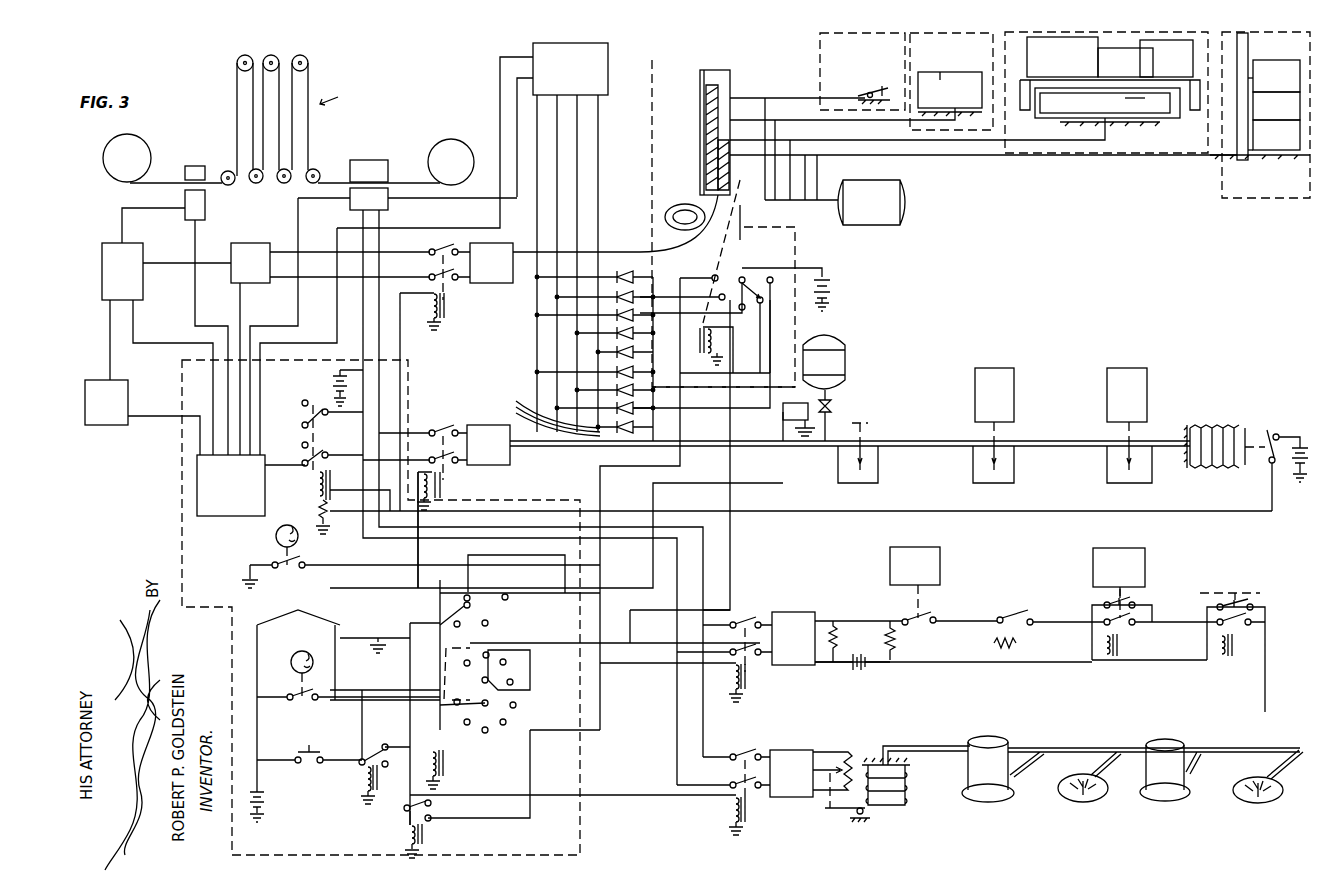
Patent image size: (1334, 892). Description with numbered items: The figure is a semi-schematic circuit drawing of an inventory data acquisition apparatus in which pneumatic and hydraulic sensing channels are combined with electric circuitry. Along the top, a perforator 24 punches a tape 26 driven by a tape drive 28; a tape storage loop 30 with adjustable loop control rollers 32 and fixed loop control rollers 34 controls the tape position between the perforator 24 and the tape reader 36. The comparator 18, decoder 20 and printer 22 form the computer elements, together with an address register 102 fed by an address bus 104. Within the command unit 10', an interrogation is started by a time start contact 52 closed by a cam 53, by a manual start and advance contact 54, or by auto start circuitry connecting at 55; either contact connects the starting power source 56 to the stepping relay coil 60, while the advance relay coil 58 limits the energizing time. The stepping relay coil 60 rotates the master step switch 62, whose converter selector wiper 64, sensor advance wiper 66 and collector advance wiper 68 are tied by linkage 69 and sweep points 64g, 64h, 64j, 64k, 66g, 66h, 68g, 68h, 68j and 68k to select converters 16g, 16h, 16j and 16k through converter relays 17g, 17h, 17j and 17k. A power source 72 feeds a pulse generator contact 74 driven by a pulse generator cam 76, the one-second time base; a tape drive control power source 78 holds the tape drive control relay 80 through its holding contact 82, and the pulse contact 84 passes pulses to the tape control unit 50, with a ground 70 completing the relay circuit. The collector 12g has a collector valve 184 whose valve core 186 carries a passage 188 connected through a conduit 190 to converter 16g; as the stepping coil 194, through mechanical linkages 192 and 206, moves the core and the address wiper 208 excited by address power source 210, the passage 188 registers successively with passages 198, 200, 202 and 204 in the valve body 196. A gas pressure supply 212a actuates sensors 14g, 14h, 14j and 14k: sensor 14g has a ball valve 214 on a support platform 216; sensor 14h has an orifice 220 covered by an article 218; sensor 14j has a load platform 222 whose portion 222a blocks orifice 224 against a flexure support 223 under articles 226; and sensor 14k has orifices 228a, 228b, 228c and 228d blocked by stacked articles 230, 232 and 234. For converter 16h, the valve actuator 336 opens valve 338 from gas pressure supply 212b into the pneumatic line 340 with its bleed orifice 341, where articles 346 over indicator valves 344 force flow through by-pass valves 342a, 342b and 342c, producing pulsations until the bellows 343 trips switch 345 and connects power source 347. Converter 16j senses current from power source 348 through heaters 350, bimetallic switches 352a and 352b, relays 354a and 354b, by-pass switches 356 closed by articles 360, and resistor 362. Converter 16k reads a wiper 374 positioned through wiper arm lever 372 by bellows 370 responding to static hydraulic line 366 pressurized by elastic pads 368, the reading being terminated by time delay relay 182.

The command unit 10' is at (378, 607).
The collector 12g is at (651, 145).
The sensor 14g is at (820, 52).
The sensor 14h is at (912, 124).
The sensor 14j is at (1020, 153).
The sensor 14k is at (1270, 198).
The converter 16g is at (492, 272).
The converter 16h is at (489, 454).
The converter 16j is at (796, 648).
The converter 16k is at (793, 784).
The converter relay 17g is at (447, 306).
The converter relay 17h is at (444, 484).
The converter relay 17j is at (750, 679).
The converter relay 17k is at (748, 810).
The comparator 18 is at (258, 272).
The decoder 20 is at (129, 281).
The printer 22 is at (113, 412).
The perforator 24 is at (367, 160).
The punched tape 26 is at (393, 184).
The tape drive 28 is at (459, 171).
The tape storage loop 30 is at (339, 98).
The adjustable loop control rollers 32 is at (307, 57).
The fixed loop control rollers 34 is at (318, 170).
The tape reader 36 is at (205, 212).
The tape control unit 50 is at (238, 495).
The time start contact 52 is at (302, 703).
The cam 53 is at (302, 651).
The manual start and advance contact 54 is at (314, 755).
The auto start circuitry connection 55 is at (298, 611).
The starting power source 56 is at (267, 800).
The advance relay coil 58 is at (365, 787).
The stepping relay coil 60 is at (447, 760).
The master step switch 62 is at (591, 624).
The converter selector wiper 64 is at (488, 606).
The contact point 64g is at (478, 576).
The contact point 64h is at (509, 597).
The contact point 64j is at (463, 606).
The contact point 64k is at (462, 626).
The sensor advance wiper 66 is at (509, 670).
The contact point 66g is at (490, 656).
The contact point 66h is at (514, 668).
The collector advance wiper 68 is at (480, 730).
The contact point 68g is at (495, 740).
The contact point 68h is at (455, 725).
The contact point 68j is at (510, 731).
The contact point 68k is at (517, 703).
The linkage 69 is at (440, 670).
The ground 70 is at (366, 648).
The power source 72 is at (246, 582).
The pulse generator contact 74 is at (287, 569).
The pulse generator cam 76 is at (276, 538).
The tape drive control power source 78 is at (354, 392).
The tape drive control relay 80 is at (315, 487).
The holding contact 82 is at (302, 410).
The pulse contact 84 is at (302, 448).
The address register 102 is at (580, 79).
The address bus 104 is at (541, 418).
The time delay relay 182 is at (425, 834).
The collector valve 184 is at (697, 64).
The valve core 186 is at (712, 110).
The passage 188 is at (718, 158).
The conduit 190 is at (646, 252).
The mechanical linkage 192 is at (738, 235).
The stepping coil 194 is at (701, 354).
The valve body 196 is at (700, 82).
The passage 198 is at (730, 98).
The passage 200 is at (730, 120).
The passage 202 is at (730, 140).
The passage 204 is at (757, 222).
The mechanical linkage 206 is at (731, 278).
The address wiper 208 is at (748, 278).
The address power source 210 is at (833, 288).
The gas pressure supply 212a is at (905, 203).
The gas pressure supply 212b is at (847, 362).
The ball valve 214 is at (866, 95).
The support platform 216 is at (882, 88).
The article 218 is at (940, 72).
The orifice 220 is at (966, 106).
The load platform 222 is at (1022, 110).
The platform portion 222a is at (1100, 98).
The flexure support 223 is at (1140, 96).
The orifice 224 is at (1120, 100).
The articles 226 is at (1110, 57).
The orifice 228a is at (1246, 160).
The orifice 228b is at (1240, 160).
The orifice 228c is at (1250, 78).
The orifice 228d is at (1250, 48).
The article 230 is at (1284, 144).
The article 232 is at (1284, 115).
The article 234 is at (1284, 85).
The valve actuator 336 is at (783, 412).
The valve 338 is at (835, 405).
The pneumatic line 340 is at (940, 447).
The bleed orifice 341 is at (576, 452).
The by-pass valve 342a is at (878, 483).
The by-pass valve 342b is at (1014, 483).
The by-pass valve 342c is at (1152, 483).
The bellows 343 is at (1210, 428).
The valve 344 is at (1134, 444).
The switch 345 is at (1270, 463).
The article 346 is at (1117, 368).
The power source 347 is at (1306, 440).
The power source 348 is at (860, 670).
The electrical heaters 350 is at (1013, 645).
The bimetallic switch 352a is at (928, 617).
The bimetallic switch 352b is at (1028, 618).
The relay 354a is at (1124, 647).
The relay 354b is at (1244, 640).
The by-pass switches 356 is at (1252, 606).
The article 360 is at (1105, 549).
The resistor 362 is at (838, 630).
The static hydraulic line 366 is at (958, 748).
The elastic pads 368 is at (1258, 803).
The bellows 370 is at (900, 797).
The wiper arm lever 372 is at (832, 812).
The wiper 374 is at (830, 754).